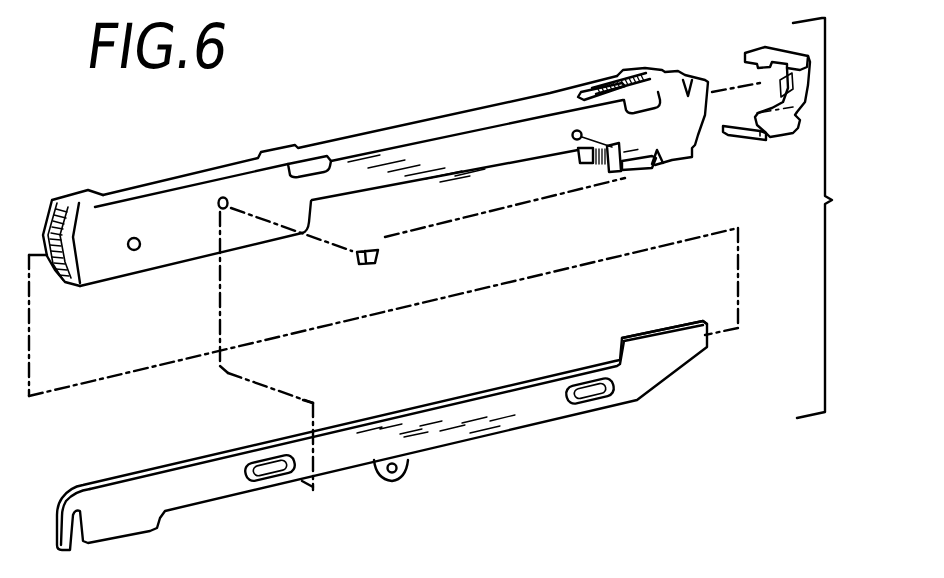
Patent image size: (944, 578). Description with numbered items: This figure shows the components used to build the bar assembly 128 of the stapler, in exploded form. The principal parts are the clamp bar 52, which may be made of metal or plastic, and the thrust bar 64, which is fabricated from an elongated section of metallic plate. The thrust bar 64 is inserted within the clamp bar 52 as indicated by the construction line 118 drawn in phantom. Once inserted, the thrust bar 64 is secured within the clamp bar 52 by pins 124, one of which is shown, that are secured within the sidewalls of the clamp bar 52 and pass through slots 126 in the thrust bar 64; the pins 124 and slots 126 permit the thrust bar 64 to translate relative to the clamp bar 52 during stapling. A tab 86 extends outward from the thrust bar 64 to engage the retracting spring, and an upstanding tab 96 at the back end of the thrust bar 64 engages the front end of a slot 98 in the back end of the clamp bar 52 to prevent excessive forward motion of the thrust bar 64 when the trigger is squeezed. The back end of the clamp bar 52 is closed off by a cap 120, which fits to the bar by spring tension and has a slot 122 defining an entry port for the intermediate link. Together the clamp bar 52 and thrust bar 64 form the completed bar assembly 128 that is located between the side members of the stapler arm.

The clamp bar 52 is at (443, 181).
The thrust bar 64 is at (668, 377).
The tab 86 is at (408, 474).
The tab 96 is at (668, 330).
The slot 98 is at (607, 88).
The construction line 118 is at (353, 320).
The cap 120 is at (771, 139).
The slot 122 is at (786, 50).
The pin 124 is at (379, 257).
The slot 126 is at (263, 476).
The bar assembly 128 is at (837, 218).